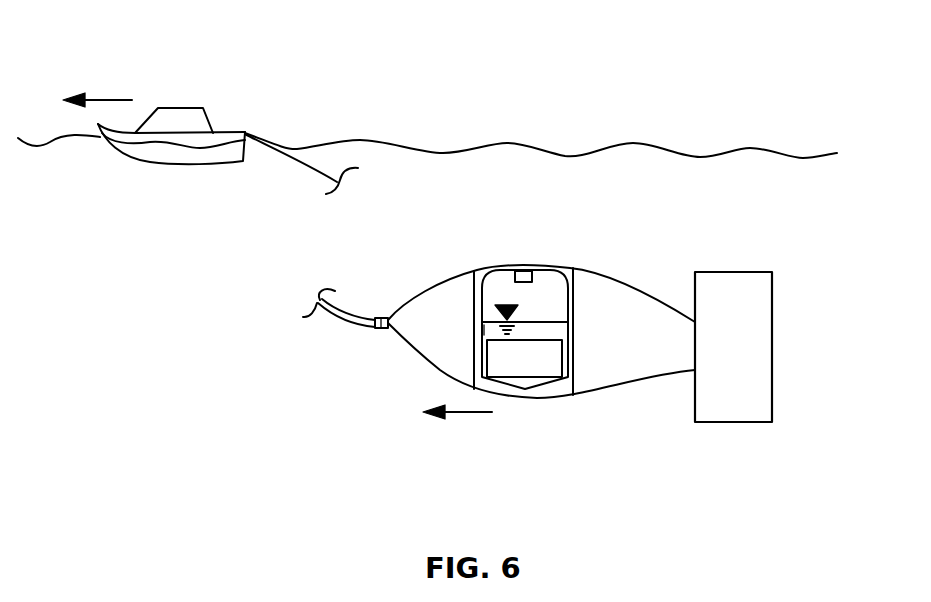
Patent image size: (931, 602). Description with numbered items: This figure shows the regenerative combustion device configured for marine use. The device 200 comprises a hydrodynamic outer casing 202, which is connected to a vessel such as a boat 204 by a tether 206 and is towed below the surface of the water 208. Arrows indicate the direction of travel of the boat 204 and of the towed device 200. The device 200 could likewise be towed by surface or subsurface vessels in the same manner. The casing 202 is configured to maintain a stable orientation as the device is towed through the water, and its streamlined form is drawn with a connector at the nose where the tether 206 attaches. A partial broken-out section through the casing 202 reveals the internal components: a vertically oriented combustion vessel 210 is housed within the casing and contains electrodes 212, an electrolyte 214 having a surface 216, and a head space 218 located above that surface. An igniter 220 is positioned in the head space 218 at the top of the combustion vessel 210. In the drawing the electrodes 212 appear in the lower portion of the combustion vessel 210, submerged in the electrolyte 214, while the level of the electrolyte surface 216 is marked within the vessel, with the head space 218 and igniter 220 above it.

The device 200 is at (367, 447).
The hydrodynamic outer casing 202 is at (423, 332).
The boat 204 is at (204, 85).
The tether 206 is at (272, 138).
The surface of the water 208 is at (580, 157).
The combustion vessel 210 is at (586, 364).
The electrodes 212 is at (527, 367).
The electrolyte 214 is at (558, 332).
The surface 216 is at (552, 320).
The head space 218 is at (465, 372).
The igniter 220 is at (527, 273).